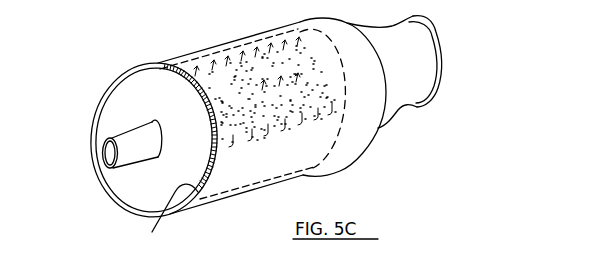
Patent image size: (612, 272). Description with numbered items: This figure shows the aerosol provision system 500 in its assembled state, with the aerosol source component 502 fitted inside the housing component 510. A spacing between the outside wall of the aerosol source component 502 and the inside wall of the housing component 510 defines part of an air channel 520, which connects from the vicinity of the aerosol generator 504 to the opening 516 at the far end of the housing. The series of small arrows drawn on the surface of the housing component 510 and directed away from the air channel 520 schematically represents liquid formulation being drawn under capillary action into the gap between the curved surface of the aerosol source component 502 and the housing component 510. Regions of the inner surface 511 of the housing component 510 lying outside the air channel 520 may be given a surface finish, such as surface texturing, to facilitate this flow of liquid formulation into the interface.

The aerosol provision system 500 is at (459, 150).
The aerosol source component 502 is at (116, 79).
The aerosol generator 504 is at (107, 181).
The housing component 510 is at (353, 164).
The inner surface of the housing component 511 is at (161, 220).
The opening 516 is at (445, 50).
The air channel 520 is at (194, 108).